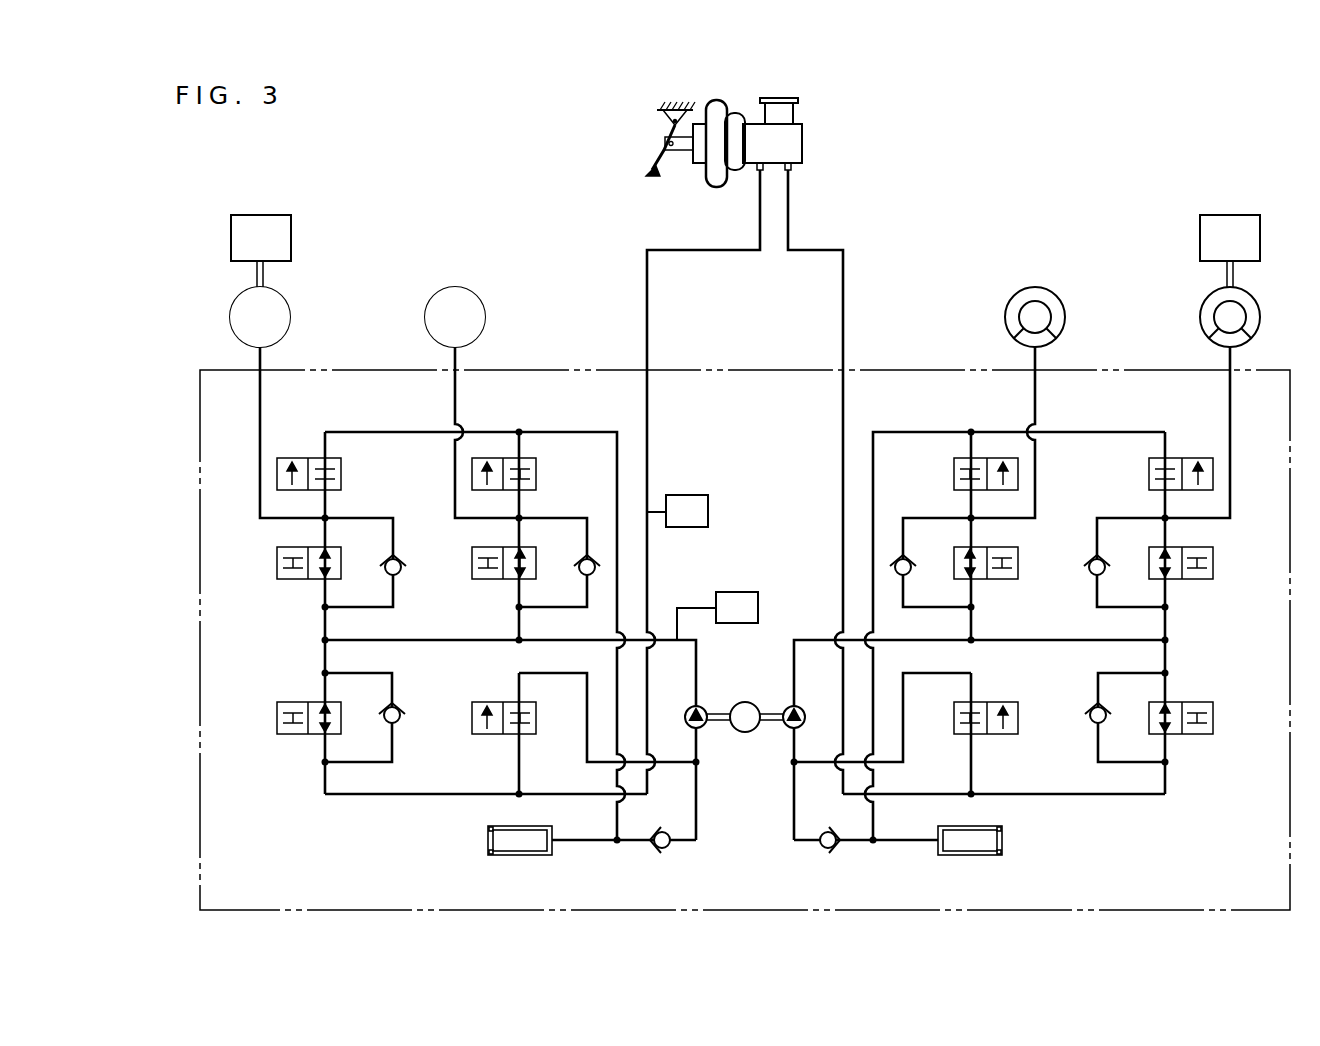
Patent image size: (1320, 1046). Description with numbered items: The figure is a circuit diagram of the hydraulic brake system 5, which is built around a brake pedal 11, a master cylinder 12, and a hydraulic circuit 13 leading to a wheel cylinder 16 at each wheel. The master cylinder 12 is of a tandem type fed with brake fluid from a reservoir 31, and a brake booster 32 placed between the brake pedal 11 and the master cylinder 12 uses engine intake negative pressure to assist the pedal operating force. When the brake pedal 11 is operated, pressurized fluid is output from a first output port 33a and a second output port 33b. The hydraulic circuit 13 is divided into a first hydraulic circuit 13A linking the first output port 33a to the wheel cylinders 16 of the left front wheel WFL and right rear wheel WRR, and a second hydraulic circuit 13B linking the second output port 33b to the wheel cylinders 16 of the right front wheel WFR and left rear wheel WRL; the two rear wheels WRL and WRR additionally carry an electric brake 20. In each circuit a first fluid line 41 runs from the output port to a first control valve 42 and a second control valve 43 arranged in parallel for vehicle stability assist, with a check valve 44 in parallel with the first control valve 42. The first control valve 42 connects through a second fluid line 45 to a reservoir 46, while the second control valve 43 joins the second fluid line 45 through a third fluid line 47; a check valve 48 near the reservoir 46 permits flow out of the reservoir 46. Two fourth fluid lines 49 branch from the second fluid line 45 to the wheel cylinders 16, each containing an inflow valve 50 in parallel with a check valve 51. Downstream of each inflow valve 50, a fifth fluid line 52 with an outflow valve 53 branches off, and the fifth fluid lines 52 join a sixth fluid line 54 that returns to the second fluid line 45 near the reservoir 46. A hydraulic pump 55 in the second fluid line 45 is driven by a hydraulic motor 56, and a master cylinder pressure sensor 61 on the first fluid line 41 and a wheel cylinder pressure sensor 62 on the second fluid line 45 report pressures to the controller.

The brake system 5 is at (1040, 167).
The brake pedal 11 is at (648, 170).
The master cylinder 12 is at (802, 140).
The hydraulic circuit 13 is at (880, 292).
The first hydraulic circuit 13A is at (597, 422).
The second hydraulic circuit 13B is at (905, 419).
The wheel cylinder 16 is at (243, 340).
The electric brake 20 is at (292, 233).
The reservoir 31 is at (790, 112).
The brake booster 32 is at (717, 106).
The first output port 33a is at (759, 178).
The second output port 33b is at (789, 178).
The first fluid line 41 is at (648, 319).
The first control valve 42 is at (283, 700).
The second control valve 43 is at (483, 700).
The check valve 44 is at (400, 722).
The second fluid line 45 is at (438, 638).
The reservoir 46 is at (520, 856).
The third fluid line 47 is at (550, 675).
The check valve 48 is at (650, 852).
The fourth fluid line 49 is at (261, 406).
The inflow valve 50 is at (290, 582).
The check valve 51 is at (401, 559).
The fifth fluid line 52 is at (326, 508).
The outflow valve 53 is at (341, 470).
The sixth fluid line 54 is at (385, 432).
The hydraulic pump 55 is at (704, 730).
The hydraulic motor 56 is at (746, 702).
The master cylinder pressure sensor 61 is at (690, 494).
The wheel cylinder pressure sensor 62 is at (743, 592).
The right rear wheel WRR is at (291, 300).
The left front wheel WFL is at (485, 300).
The right front wheel WFR is at (1066, 300).
The left rear wheel WRL is at (1261, 300).